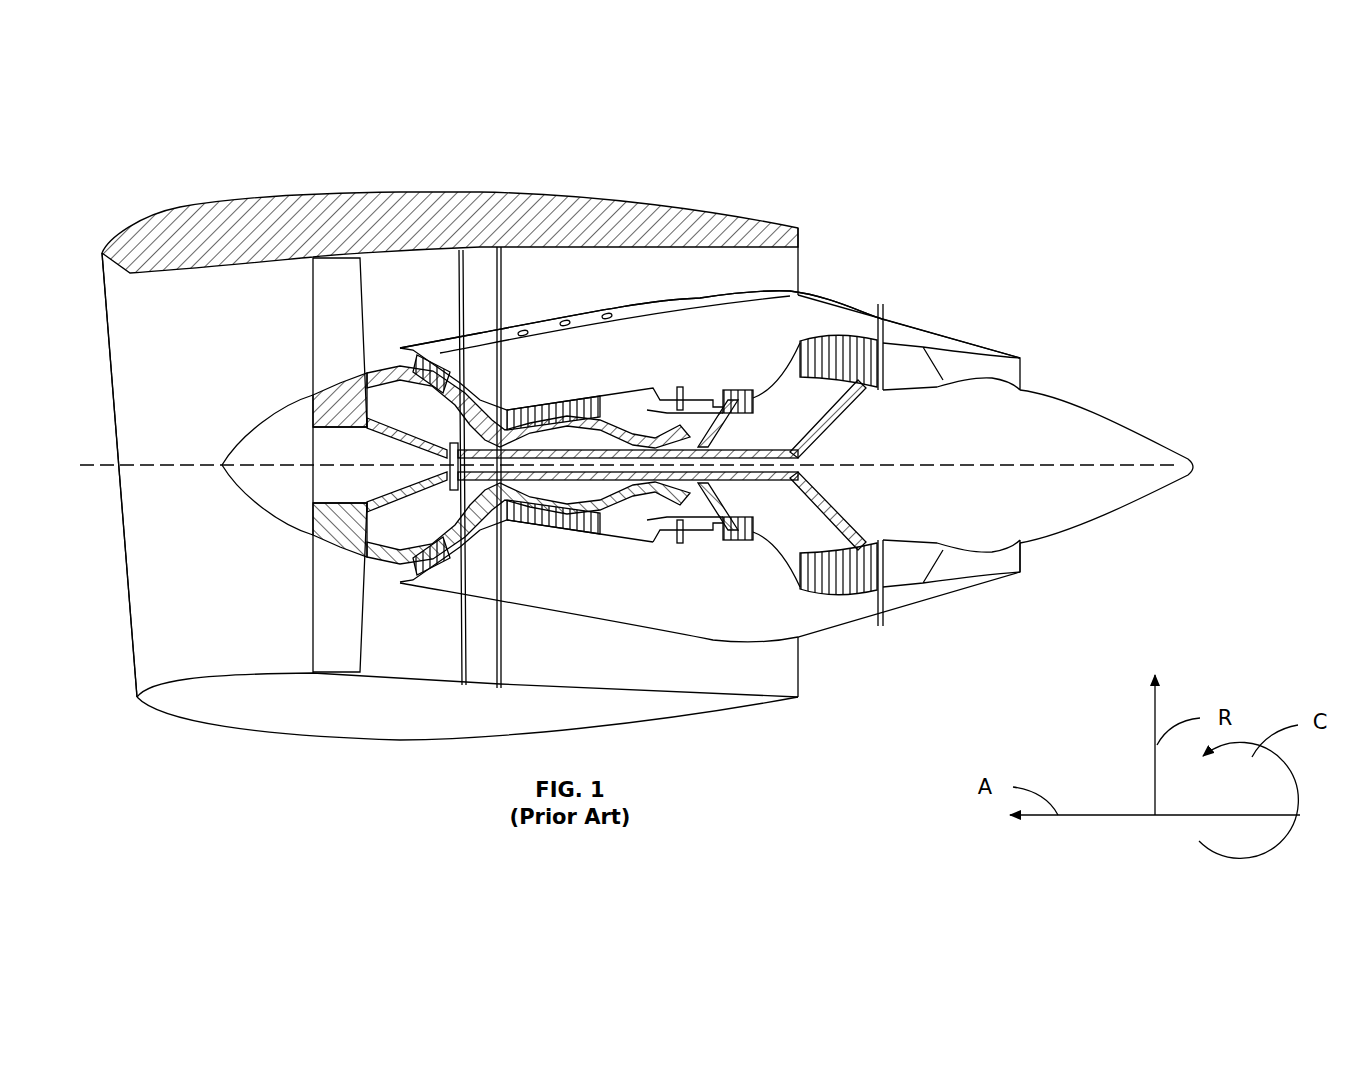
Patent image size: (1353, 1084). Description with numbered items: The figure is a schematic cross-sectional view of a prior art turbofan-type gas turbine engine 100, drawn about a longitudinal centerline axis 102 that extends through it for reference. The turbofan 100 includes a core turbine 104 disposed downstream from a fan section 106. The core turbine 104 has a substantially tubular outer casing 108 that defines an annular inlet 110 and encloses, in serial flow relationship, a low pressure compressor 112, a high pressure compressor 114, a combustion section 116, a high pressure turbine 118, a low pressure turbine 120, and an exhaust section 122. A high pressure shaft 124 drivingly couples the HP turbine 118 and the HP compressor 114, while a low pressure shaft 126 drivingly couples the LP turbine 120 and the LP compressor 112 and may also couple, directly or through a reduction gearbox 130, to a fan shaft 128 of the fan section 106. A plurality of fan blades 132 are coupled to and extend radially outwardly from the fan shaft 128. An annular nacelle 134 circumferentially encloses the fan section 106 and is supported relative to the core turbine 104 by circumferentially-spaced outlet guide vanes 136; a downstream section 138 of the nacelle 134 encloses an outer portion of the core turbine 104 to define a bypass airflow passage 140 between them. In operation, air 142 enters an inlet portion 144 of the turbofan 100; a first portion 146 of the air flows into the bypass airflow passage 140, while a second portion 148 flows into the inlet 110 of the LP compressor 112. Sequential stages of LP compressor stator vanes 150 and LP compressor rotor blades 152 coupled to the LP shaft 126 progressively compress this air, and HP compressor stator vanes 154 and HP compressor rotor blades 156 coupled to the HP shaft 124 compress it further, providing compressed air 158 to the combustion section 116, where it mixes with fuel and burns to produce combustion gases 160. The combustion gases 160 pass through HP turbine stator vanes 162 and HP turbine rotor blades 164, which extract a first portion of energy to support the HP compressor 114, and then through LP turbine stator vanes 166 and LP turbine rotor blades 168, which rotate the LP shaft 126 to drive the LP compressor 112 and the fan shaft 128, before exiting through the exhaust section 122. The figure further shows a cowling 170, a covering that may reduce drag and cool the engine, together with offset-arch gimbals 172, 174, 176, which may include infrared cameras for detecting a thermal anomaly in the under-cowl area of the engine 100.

The turbofan gas turbine engine 100 is at (937, 200).
The longitudinal centerline axis 102 is at (945, 462).
The core turbine 104 is at (610, 355).
The fan section 106 is at (232, 330).
The outer casing 108 is at (643, 625).
The annular inlet 110 is at (408, 572).
The low pressure compressor 112 is at (460, 553).
The high pressure compressor 114 is at (537, 537).
The combustion section 116 is at (697, 540).
The high pressure turbine 118 is at (762, 527).
The low pressure turbine 120 is at (880, 597).
The exhaust section 122 is at (1030, 363).
The high pressure shaft 124 is at (673, 413).
The low pressure shaft 126 is at (476, 448).
The fan shaft 128 is at (360, 437).
The reduction gearbox 130 is at (437, 562).
The fan blades 132 is at (313, 600).
The nacelle 134 is at (352, 735).
The outlet guide vanes 136 is at (498, 280).
The downstream section of the nacelle 138 is at (705, 208).
The bypass airflow passage 140 is at (622, 256).
The air 142 is at (80, 465).
The inlet portion 144 is at (133, 673).
The first portion of the air 146 is at (413, 287).
The second portion of the air 148 is at (457, 377).
The LP compressor stator vanes 150 is at (433, 574).
The LP compressor rotor blades 152 is at (423, 575).
The HP compressor stator vanes 154 is at (637, 527).
The HP compressor rotor blades 156 is at (630, 527).
The compressed air 158 is at (673, 403).
The combustion gases 160 is at (777, 383).
The HP turbine stator vanes 162 is at (737, 540).
The HP turbine rotor blades 164 is at (733, 517).
The LP turbine stator vanes 166 is at (800, 360).
The LP turbine rotor blades 168 is at (823, 343).
The cowling 170 is at (695, 297).
The offset-arch gimbal 172 is at (523, 330).
The offset-arch gimbal 174 is at (565, 320).
The offset-arch gimbal 176 is at (607, 313).